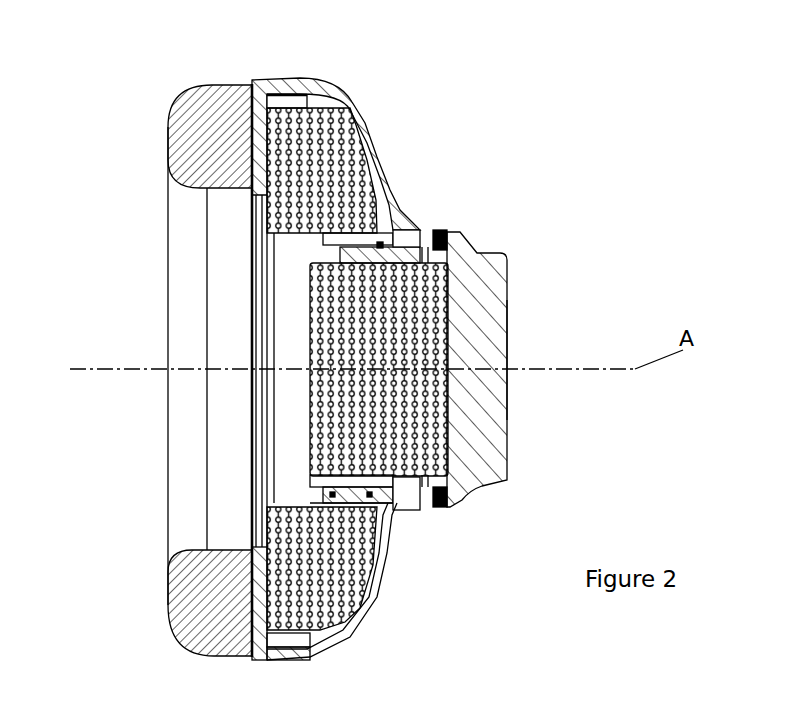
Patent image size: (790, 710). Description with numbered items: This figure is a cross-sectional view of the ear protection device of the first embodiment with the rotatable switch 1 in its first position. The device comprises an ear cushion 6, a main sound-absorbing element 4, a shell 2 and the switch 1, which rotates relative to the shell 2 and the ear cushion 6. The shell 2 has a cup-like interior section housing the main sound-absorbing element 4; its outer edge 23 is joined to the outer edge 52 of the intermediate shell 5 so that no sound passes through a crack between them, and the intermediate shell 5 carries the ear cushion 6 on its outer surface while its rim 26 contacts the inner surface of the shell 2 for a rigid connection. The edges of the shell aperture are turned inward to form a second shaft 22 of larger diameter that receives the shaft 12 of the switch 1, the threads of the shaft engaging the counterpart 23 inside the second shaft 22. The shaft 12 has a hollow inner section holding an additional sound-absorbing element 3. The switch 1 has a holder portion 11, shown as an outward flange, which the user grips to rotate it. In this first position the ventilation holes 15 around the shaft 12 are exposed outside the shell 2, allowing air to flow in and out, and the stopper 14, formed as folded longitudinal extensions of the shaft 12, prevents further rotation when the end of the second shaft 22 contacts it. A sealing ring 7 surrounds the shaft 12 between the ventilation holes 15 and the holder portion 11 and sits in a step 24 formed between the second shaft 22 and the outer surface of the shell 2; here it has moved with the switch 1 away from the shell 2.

The rotatable switch 1 is at (468, 337).
The shell 2 is at (333, 130).
The additional sound-absorbing element 3 is at (440, 425).
The main sound-absorbing element 4 is at (330, 593).
The intermediate shell 5 is at (253, 552).
The ear cushion 6 is at (197, 143).
The sealing ring 7 is at (443, 228).
The holder portion 11 is at (513, 357).
The shaft 12 is at (407, 487).
The stopper 14 is at (310, 503).
The ventilation holes 15 is at (427, 244).
The second shaft 22 is at (380, 503).
The outer edge of the shell / counterpart 23 is at (270, 79).
The step 24 is at (398, 224).
The rim 26 is at (287, 102).
The outer edge of the intermediate shell 52 is at (253, 79).